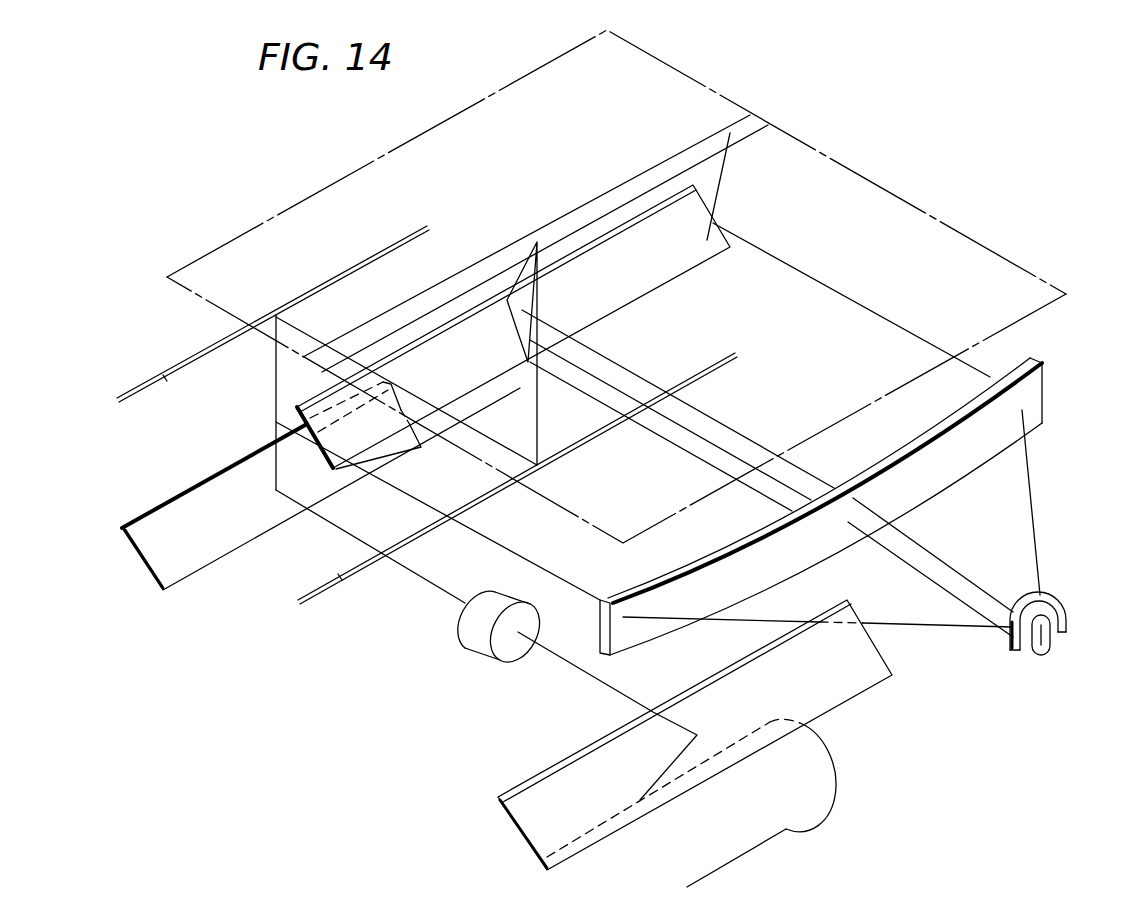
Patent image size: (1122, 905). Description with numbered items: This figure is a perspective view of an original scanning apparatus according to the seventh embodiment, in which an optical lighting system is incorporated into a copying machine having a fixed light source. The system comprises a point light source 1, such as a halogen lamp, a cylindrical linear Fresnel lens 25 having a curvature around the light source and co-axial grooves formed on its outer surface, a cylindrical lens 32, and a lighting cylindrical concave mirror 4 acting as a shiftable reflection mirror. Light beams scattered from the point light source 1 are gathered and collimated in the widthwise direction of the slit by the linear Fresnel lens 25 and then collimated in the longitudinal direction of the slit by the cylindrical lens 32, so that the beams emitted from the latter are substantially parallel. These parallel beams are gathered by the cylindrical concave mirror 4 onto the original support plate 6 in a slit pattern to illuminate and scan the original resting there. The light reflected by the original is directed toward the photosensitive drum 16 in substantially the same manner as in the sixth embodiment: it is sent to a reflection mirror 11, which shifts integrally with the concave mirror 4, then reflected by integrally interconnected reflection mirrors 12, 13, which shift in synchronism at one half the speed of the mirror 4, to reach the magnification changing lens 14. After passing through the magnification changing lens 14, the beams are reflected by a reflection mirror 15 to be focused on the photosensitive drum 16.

The point light source 1 is at (1067, 625).
The lighting cylindrical concave mirror 4 is at (717, 227).
The original support plate 6 is at (1024, 285).
The reflection mirror 11 is at (308, 603).
The reflection mirror 12 is at (116, 403).
The reflection mirror 13 is at (120, 532).
The magnification changing lens 14 is at (473, 638).
The reflection mirror 15 is at (878, 665).
The photosensitive drum 16 is at (820, 763).
The cylindrical linear Fresnel lens 25 is at (1059, 596).
The cylindrical lens 32 is at (1040, 402).